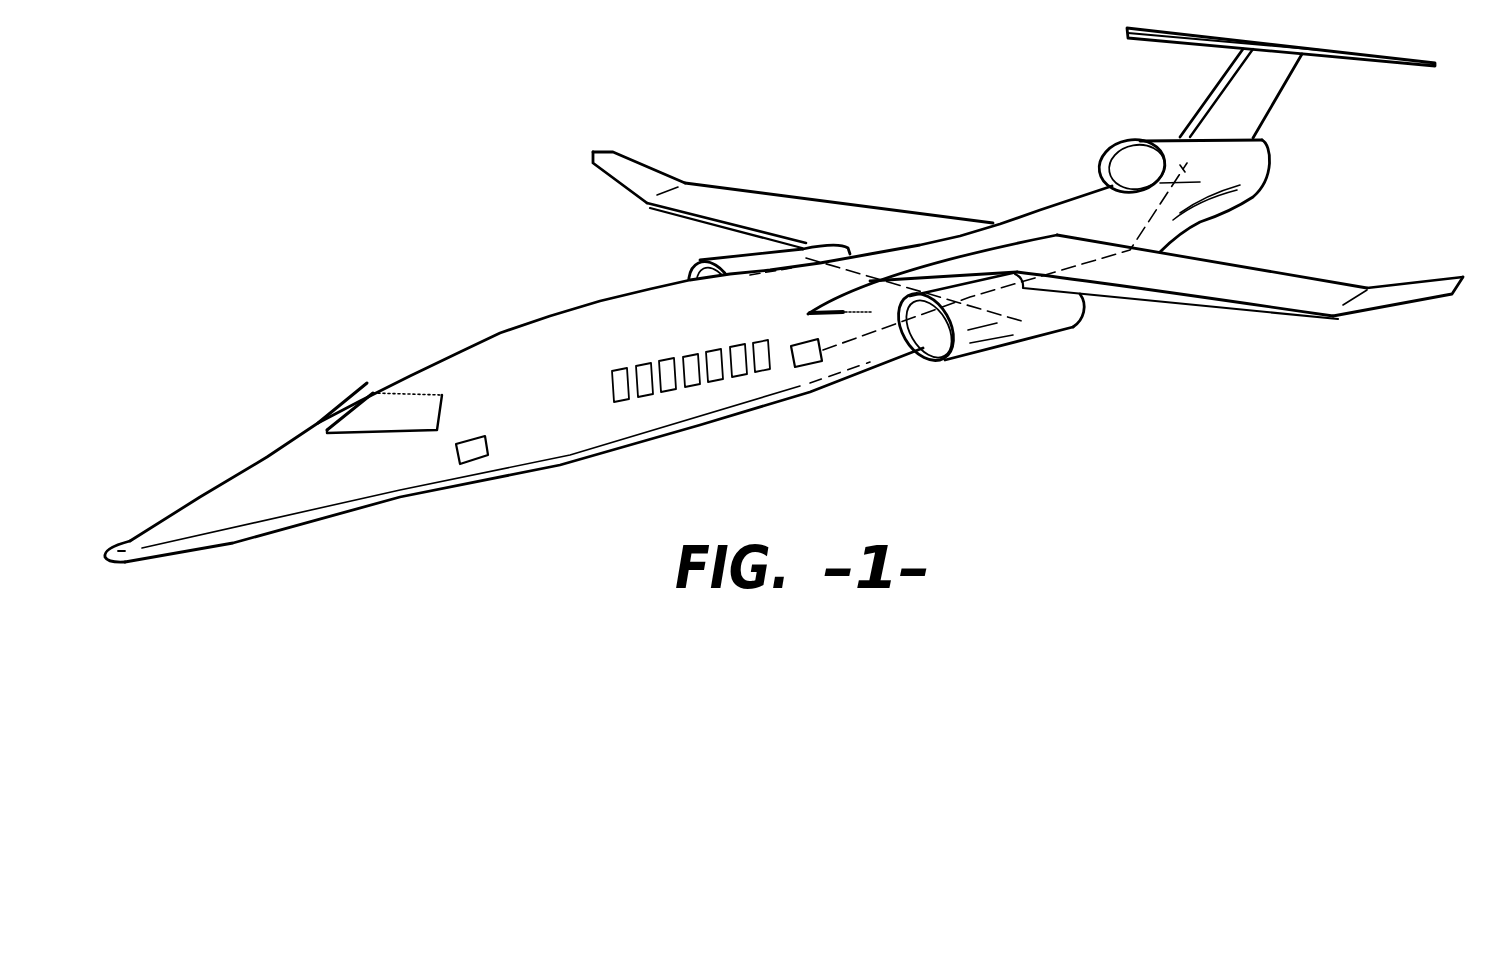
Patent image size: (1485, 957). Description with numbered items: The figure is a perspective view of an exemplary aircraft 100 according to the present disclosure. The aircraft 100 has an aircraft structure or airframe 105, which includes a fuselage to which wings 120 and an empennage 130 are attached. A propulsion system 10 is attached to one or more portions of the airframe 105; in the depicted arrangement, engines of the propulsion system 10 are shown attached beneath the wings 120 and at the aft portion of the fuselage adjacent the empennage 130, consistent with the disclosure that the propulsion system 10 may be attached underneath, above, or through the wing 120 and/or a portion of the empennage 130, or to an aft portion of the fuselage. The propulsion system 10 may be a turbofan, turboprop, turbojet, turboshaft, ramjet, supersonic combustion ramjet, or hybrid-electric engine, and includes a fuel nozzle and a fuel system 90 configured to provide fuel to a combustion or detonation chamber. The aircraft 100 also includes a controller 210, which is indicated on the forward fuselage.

The aircraft 100 is at (350, 132).
The airframe 105 is at (588, 268).
The propulsion system 10 is at (732, 262).
The wings 120 is at (778, 212).
The empennage 130 is at (1302, 103).
The fuel system 90 is at (823, 352).
The controller 210 is at (489, 448).